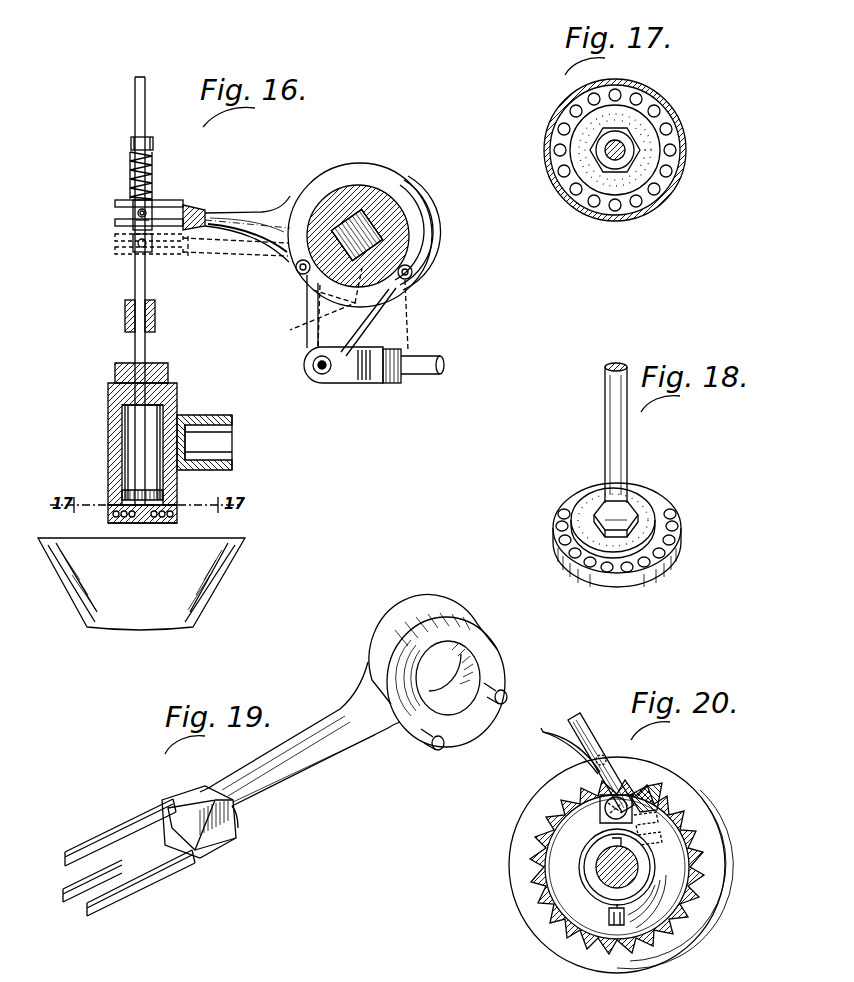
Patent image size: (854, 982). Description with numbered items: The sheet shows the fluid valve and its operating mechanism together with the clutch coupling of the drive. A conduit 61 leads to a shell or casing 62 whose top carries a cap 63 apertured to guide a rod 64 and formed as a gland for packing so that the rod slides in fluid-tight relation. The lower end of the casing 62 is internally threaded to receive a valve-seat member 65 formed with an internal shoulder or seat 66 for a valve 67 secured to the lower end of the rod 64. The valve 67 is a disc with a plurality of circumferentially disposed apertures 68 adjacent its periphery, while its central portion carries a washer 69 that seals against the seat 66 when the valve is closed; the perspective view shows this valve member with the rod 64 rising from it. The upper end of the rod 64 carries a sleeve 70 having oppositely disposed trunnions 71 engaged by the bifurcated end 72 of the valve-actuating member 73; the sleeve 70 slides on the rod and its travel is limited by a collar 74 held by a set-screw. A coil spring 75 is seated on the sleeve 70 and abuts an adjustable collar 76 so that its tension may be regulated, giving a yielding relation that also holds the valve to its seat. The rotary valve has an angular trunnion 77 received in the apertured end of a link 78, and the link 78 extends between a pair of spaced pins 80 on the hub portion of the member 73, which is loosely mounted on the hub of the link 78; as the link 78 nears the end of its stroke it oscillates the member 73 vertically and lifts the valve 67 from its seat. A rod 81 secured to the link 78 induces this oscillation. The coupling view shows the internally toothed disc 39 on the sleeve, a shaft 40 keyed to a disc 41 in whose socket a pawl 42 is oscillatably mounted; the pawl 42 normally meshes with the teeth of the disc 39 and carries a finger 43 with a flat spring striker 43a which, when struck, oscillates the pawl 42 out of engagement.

In FIG. 20, the internally toothed disc 39 is at (700, 797).
In FIG. 20, the shaft 40 is at (642, 861).
In FIG. 20, the disc 41 is at (672, 860).
In FIG. 20, the pawl 42 is at (658, 796).
In FIG. 20, the finger 43 is at (578, 718).
In FIG. 20, the flat spring striker 43a is at (543, 733).
In FIG. 16, the conduit 61 is at (220, 417).
In FIG. 16, the shell or casing 62 is at (108, 432).
In FIG. 16, the cap 63 is at (168, 375).
In FIG. 16, the rod 64 is at (147, 290).
In FIG. 18, the rod 64 is at (605, 423).
In FIG. 16, the valve-seat member 65 is at (112, 508).
In FIG. 17, the valve-seat member 65 is at (682, 143).
In FIG. 16, the shoulder or seat 66 is at (110, 497).
In FIG. 16, the valve 67 is at (172, 524).
In FIG. 18, the valve 67 is at (690, 502).
In FIG. 16, the apertures 68 is at (118, 523).
In FIG. 17, the apertures 68 is at (563, 140).
In FIG. 18, the apertures 68 is at (559, 540).
In FIG. 17, the washer 69 is at (638, 108).
In FIG. 18, the washer 69 is at (640, 492).
In FIG. 16, the sleeve 70 is at (150, 206).
In FIG. 16, the trunnions 71 is at (160, 212).
In FIG. 16, the bifurcated end 72 is at (200, 212).
In FIG. 19, the bifurcated end 72 is at (120, 822).
In FIG. 16, the valve-actuating member 73 is at (268, 211).
In FIG. 19, the valve-actuating member 73 is at (270, 787).
In FIG. 16, the collar 74 is at (133, 246).
In FIG. 16, the coil spring 75 is at (152, 175).
In FIG. 16, the collar 76 is at (150, 140).
In FIG. 16, the trunnion 77 is at (410, 214).
In FIG. 16, the link 78 is at (313, 300).
In FIG. 16, the pins 80 is at (298, 272).
In FIG. 19, the pins 80 is at (446, 740).
In FIG. 16, the rod 81 is at (420, 362).